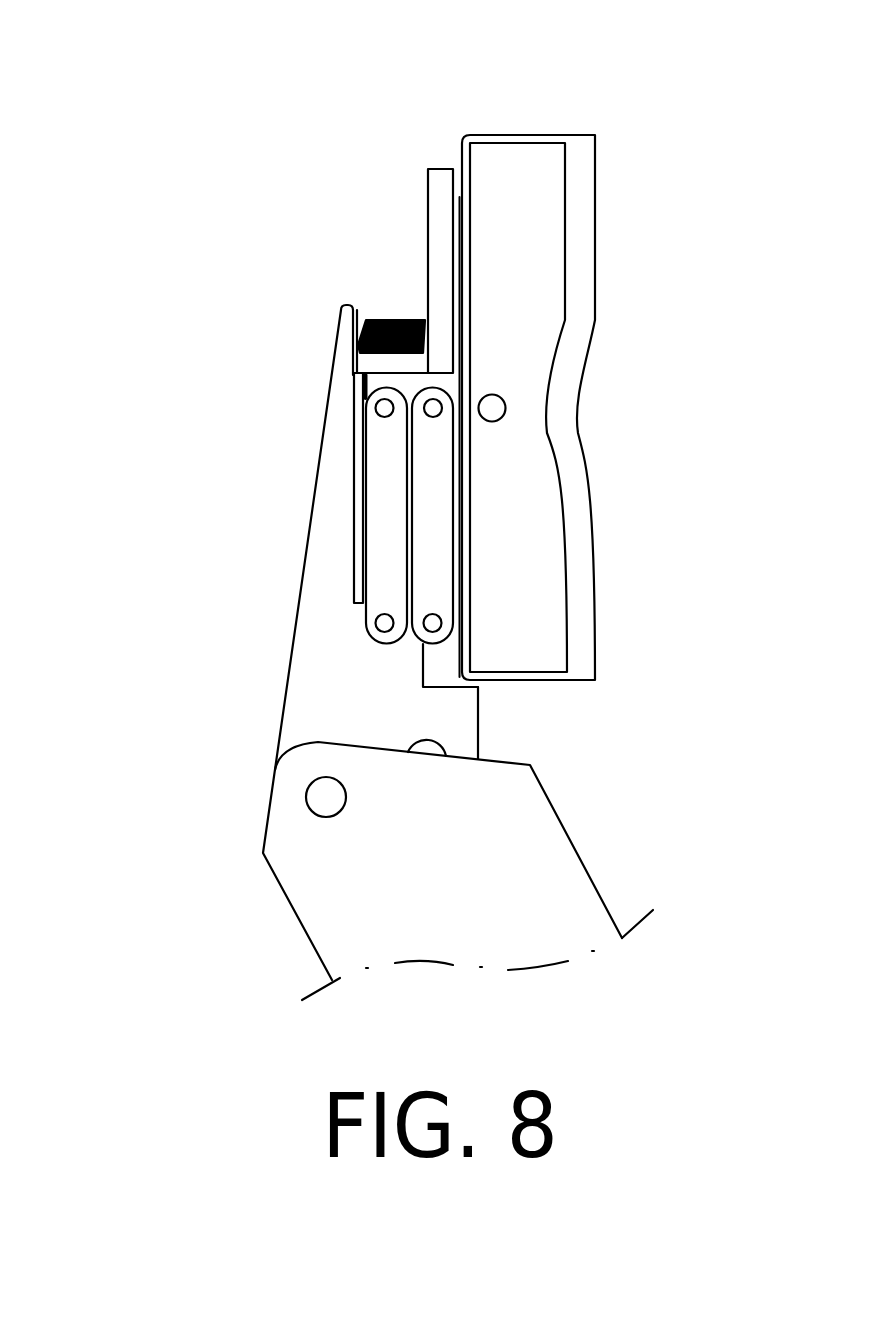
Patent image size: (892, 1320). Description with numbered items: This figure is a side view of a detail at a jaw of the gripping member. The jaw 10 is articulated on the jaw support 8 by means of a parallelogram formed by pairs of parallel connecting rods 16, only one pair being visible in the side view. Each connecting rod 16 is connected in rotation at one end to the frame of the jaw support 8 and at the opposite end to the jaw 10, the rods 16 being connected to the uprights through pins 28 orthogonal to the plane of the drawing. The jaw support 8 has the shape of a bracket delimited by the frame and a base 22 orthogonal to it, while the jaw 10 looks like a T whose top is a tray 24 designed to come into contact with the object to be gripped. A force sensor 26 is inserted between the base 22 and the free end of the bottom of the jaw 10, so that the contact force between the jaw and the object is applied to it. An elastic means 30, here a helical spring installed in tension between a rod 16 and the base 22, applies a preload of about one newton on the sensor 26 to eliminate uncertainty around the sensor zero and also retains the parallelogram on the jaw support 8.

The jaw 10 is at (363, 127).
The tray 24 is at (445, 180).
The elastic means 30 is at (387, 323).
The pins 28 is at (376, 406).
The force sensor 26 is at (358, 432).
The connecting rods 16 is at (445, 473).
The jaw support 8 is at (298, 586).
The base 22 is at (328, 610).